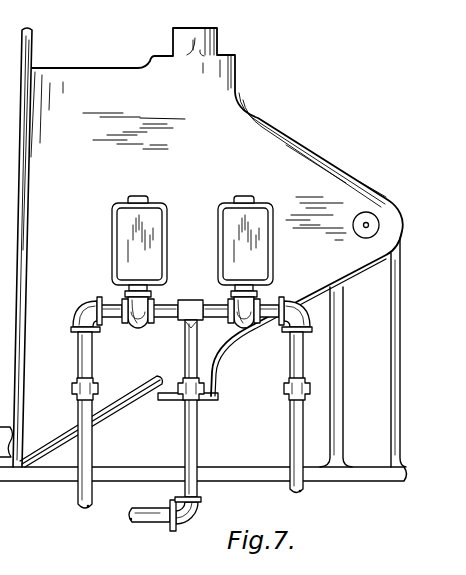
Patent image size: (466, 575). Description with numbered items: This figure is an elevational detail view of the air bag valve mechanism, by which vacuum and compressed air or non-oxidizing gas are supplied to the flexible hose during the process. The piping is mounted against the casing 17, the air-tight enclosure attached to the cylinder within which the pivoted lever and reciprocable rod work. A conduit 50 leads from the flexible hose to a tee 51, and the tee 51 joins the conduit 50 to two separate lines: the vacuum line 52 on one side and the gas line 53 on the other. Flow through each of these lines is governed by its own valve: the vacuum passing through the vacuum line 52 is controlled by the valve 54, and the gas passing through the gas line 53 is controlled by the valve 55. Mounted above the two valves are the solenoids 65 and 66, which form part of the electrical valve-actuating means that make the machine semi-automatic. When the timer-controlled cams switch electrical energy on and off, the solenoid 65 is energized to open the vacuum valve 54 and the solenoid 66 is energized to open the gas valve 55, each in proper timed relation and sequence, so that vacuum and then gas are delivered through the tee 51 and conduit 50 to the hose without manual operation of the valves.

The casing 17 is at (340, 281).
The conduit 50 is at (143, 525).
The tee 51 is at (186, 300).
The vacuum line 52 is at (73, 495).
The gas line 53 is at (288, 489).
The valve 54 is at (139, 331).
The valve 55 is at (256, 331).
The solenoid 65 is at (122, 213).
The solenoid 66 is at (226, 212).